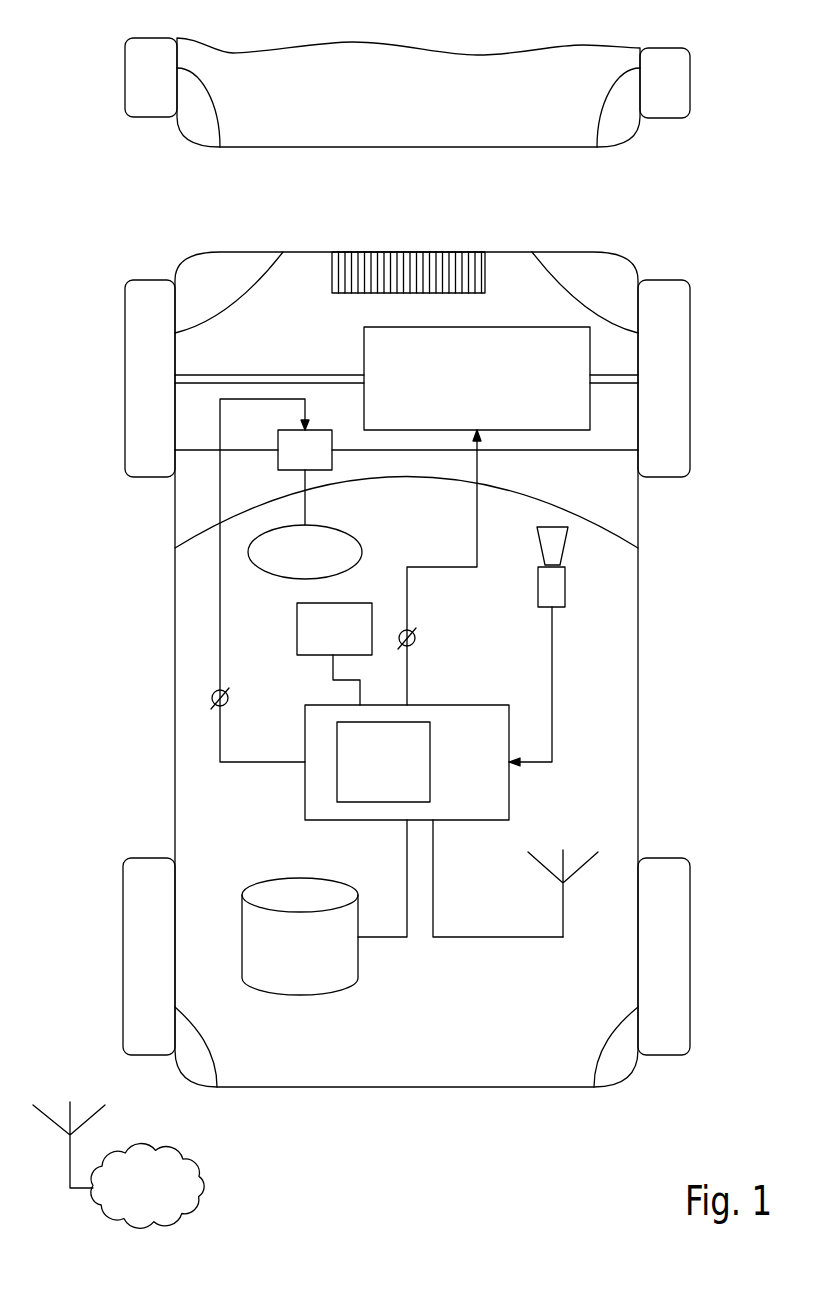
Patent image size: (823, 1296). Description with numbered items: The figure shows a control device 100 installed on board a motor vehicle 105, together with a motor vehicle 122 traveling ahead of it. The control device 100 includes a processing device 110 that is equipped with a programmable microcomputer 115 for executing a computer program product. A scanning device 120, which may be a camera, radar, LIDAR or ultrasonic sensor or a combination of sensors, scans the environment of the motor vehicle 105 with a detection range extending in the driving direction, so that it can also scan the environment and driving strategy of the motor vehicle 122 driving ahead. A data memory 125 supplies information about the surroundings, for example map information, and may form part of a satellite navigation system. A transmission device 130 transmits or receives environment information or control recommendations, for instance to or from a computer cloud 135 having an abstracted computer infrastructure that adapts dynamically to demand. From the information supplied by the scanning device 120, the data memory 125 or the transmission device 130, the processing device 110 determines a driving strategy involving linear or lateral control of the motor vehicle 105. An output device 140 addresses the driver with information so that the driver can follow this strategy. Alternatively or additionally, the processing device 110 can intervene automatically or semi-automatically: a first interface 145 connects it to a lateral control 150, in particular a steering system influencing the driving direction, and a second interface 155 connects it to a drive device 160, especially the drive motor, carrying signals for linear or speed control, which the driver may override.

The control device 100 is at (396, 701).
The motor vehicle 105 is at (617, 1087).
The processing device 110 is at (305, 787).
The programmable microcomputer 115 is at (430, 762).
The scanning device 120 is at (538, 586).
The motor vehicle traveling ahead 122 is at (617, 147).
The data memory 125 is at (242, 935).
The transmission device 130 is at (563, 905).
The computer cloud 135 is at (202, 1183).
The output device 140 is at (297, 627).
The first interface 145 is at (229, 697).
The lateral control 150 is at (310, 429).
The second interface 155 is at (416, 637).
The drive device 160 is at (364, 346).